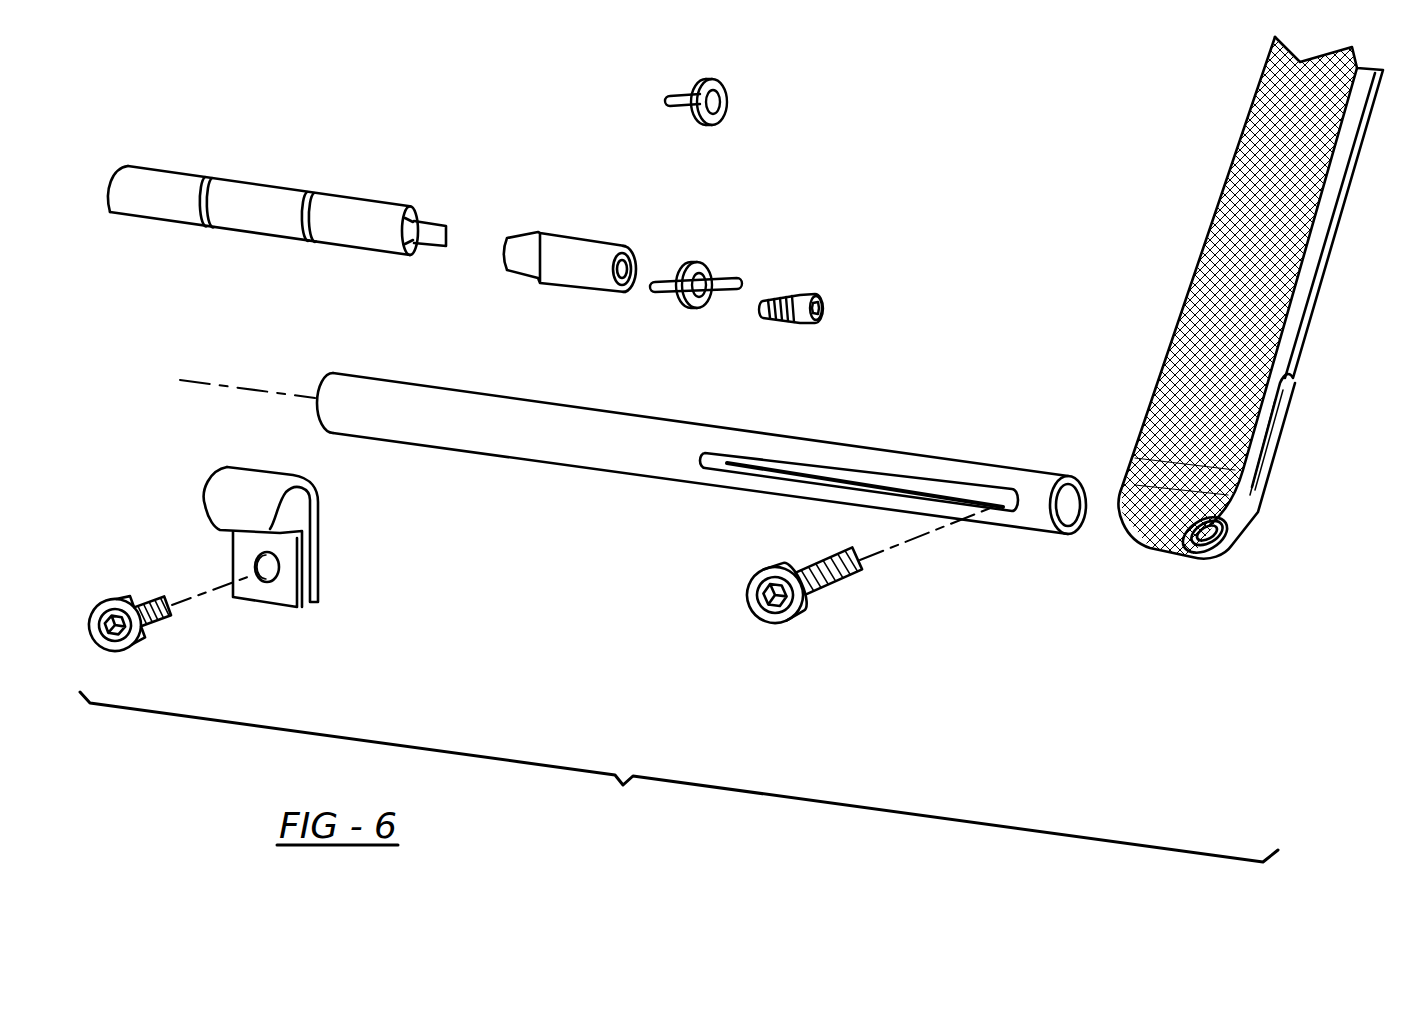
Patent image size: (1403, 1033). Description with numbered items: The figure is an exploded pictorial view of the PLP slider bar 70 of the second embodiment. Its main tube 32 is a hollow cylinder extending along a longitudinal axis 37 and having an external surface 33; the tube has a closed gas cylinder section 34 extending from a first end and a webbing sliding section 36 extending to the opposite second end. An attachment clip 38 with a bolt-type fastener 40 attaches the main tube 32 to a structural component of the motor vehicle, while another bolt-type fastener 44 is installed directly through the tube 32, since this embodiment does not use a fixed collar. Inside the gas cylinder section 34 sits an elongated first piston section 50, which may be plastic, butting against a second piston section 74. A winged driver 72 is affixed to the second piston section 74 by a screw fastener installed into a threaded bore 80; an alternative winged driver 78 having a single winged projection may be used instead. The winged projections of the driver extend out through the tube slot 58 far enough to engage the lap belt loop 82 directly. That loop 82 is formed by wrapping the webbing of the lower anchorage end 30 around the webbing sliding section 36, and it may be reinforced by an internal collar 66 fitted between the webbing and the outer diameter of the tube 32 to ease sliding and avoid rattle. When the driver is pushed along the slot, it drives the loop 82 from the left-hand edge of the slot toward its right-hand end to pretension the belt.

The lower anchorage end 30 is at (1247, 341).
The main tube 32 is at (633, 439).
The external surface 33 is at (690, 440).
The gas cylinder section 34 is at (475, 428).
The webbing sliding section 36 is at (953, 470).
The longitudinal axis 37 is at (243, 388).
The attachment clip 38 is at (230, 490).
The bolt-type fastener 40 is at (115, 598).
The bolt-type fastener 44 is at (775, 623).
The first piston section 50 is at (280, 188).
The tube slot 58 is at (727, 467).
The internal collar 66 is at (1210, 535).
The PLP slider bar 70 is at (679, 777).
The winged driver 72 is at (687, 267).
The second piston section 74 is at (570, 251).
The winged driver 78 is at (730, 82).
The threaded bore 80 is at (622, 273).
The loop 82 is at (1145, 527).